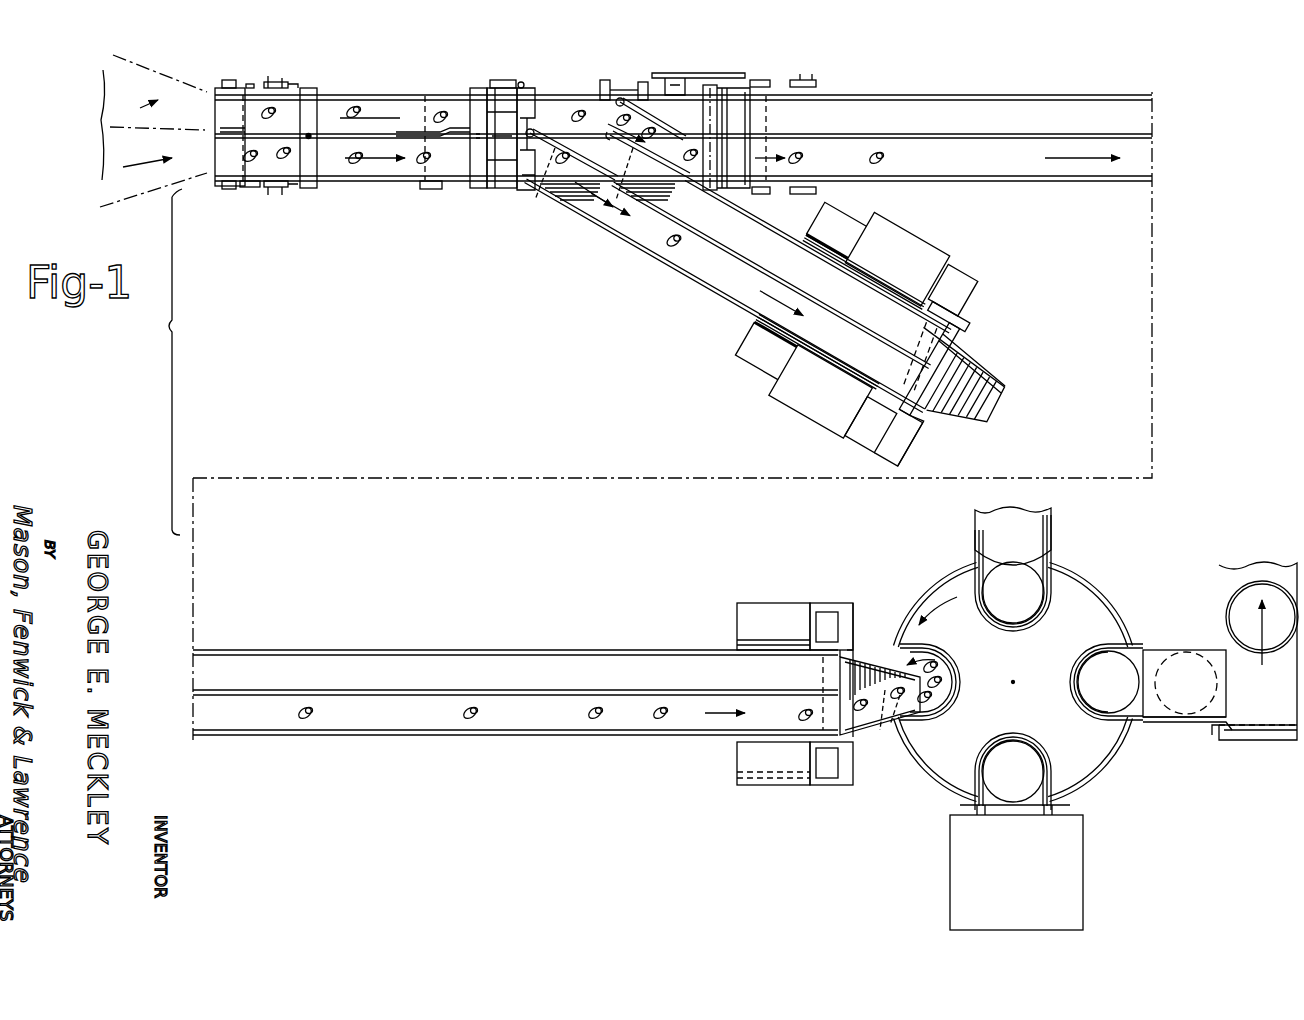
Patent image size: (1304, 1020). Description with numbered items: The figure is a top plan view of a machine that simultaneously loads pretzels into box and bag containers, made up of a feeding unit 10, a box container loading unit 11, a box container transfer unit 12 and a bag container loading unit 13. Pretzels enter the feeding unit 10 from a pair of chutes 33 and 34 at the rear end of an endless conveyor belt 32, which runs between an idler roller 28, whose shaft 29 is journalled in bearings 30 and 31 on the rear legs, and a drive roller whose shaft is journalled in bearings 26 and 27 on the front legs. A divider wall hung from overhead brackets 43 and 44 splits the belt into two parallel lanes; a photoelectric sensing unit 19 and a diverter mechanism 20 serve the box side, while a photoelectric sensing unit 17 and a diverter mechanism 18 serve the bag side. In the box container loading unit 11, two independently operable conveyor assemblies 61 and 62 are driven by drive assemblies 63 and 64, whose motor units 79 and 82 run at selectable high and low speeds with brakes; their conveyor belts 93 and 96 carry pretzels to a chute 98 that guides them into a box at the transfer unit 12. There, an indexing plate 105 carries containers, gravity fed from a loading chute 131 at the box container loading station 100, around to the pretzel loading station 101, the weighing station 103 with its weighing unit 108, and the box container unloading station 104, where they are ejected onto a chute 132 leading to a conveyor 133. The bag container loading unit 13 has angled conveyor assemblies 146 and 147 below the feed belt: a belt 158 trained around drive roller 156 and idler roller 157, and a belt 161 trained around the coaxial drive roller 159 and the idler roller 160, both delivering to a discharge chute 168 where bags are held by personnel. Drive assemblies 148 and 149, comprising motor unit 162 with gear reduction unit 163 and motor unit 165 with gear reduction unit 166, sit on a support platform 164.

The feeding unit 10 is at (384, 100).
The box container loading unit 11 is at (978, 92).
The box container transfer unit 12 is at (1120, 592).
The bag container loading unit 13 is at (688, 272).
The photoelectric sensing unit 17 is at (428, 198).
The diverter mechanism 18 is at (512, 188).
The photoelectric sensing unit 19 is at (494, 84).
The diverter mechanism 20 is at (604, 82).
The bearing 26 is at (740, 82).
The bearing 27 is at (752, 186).
The idler roller 28 is at (218, 180).
The shaft 29 is at (226, 188).
The bearing 30 is at (242, 86).
The bearing 31 is at (238, 188).
The endless conveyor belt 32 is at (398, 176).
The chute 33 is at (172, 82).
The chute 34 is at (120, 194).
The overhead bracket 43 is at (309, 182).
The overhead bracket 44 is at (472, 188).
The conveyor assembly 61 is at (1058, 108).
The conveyor assembly 62 is at (1040, 168).
The drive assembly 63 is at (770, 601).
The drive assembly 64 is at (762, 784).
The motor unit 79 is at (740, 765).
The motor unit 82 is at (740, 628).
The conveyor belt 93 is at (402, 662).
The conveyor belt 96 is at (400, 725).
The chute 98 is at (873, 715).
The box container loading station 100 is at (1058, 560).
The pretzel loading station 101 is at (895, 645).
The weighing station 103 is at (1050, 782).
The box container unloading station 104 is at (1144, 652).
The indexing plate 105 is at (1068, 590).
The weighing unit 108 is at (1016, 872).
The chute 131 is at (1050, 518).
The chute 132 is at (1175, 708).
The conveyor 133 is at (1256, 742).
The conveyor assembly 146 is at (638, 225).
The conveyor assembly 147 is at (745, 236).
The drive assembly 148 is at (800, 408).
The drive assembly 149 is at (914, 258).
The drive roller 156 is at (928, 414).
The idler roller 157 is at (556, 185).
The endless conveyor belt 158 is at (738, 292).
The drive roller 159 is at (942, 347).
The idler roller 160 is at (662, 184).
The endless conveyor belt 161 is at (810, 290).
The motor unit 162 is at (836, 421).
The gear reduction unit 163 is at (876, 445).
The support platform 164 is at (900, 448).
The motor unit 165 is at (908, 238).
The gear reduction unit 166 is at (975, 296).
The discharge chute 168 is at (1000, 386).